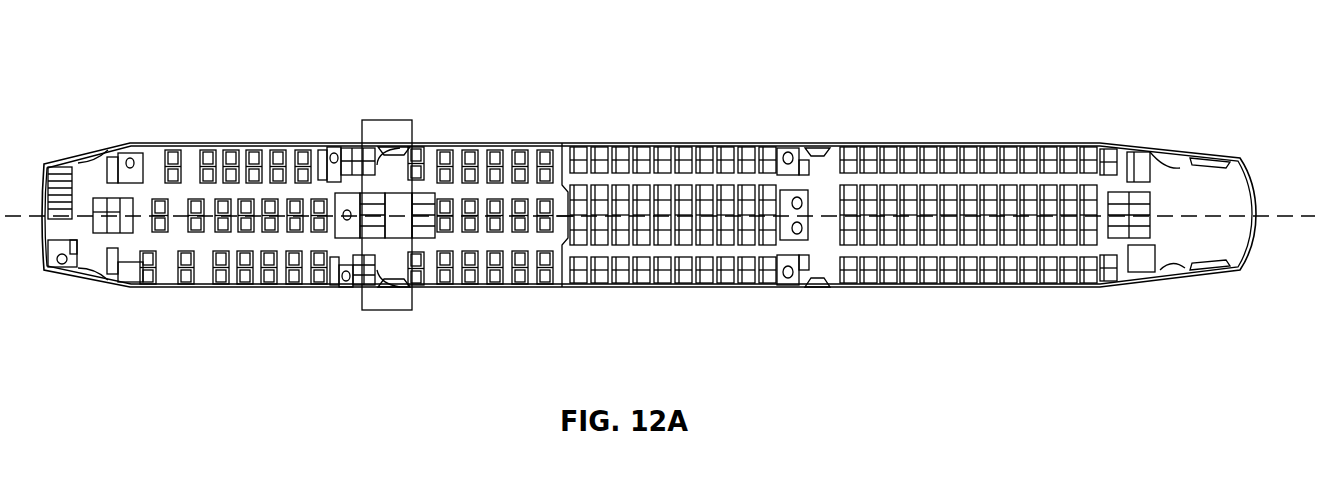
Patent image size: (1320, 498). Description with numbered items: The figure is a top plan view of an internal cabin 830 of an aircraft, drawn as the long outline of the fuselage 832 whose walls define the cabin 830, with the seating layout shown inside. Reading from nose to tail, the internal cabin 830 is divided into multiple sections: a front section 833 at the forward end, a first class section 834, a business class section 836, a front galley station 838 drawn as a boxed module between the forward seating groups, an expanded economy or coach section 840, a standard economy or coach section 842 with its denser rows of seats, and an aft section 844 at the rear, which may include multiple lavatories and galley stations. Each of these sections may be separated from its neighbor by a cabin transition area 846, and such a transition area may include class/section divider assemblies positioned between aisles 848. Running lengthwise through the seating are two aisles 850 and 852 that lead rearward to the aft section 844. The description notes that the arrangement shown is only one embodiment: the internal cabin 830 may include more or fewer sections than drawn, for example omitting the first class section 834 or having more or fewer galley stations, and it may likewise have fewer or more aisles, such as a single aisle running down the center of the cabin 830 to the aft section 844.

The internal cabin 830 is at (180, 48).
The fuselage 832 is at (510, 70).
The front section 833 is at (103, 300).
The first class section 834 is at (230, 290).
The business class section 836 is at (268, 143).
The front galley station 838 is at (388, 302).
The expanded economy or coach section 840 is at (483, 290).
The standard economy or coach section 842 is at (615, 142).
The aft section 844 is at (1178, 167).
The cabin transition area 846 is at (118, 142).
The aisles 848 is at (333, 143).
The aisle 850 is at (972, 182).
The aisle 852 is at (990, 287).